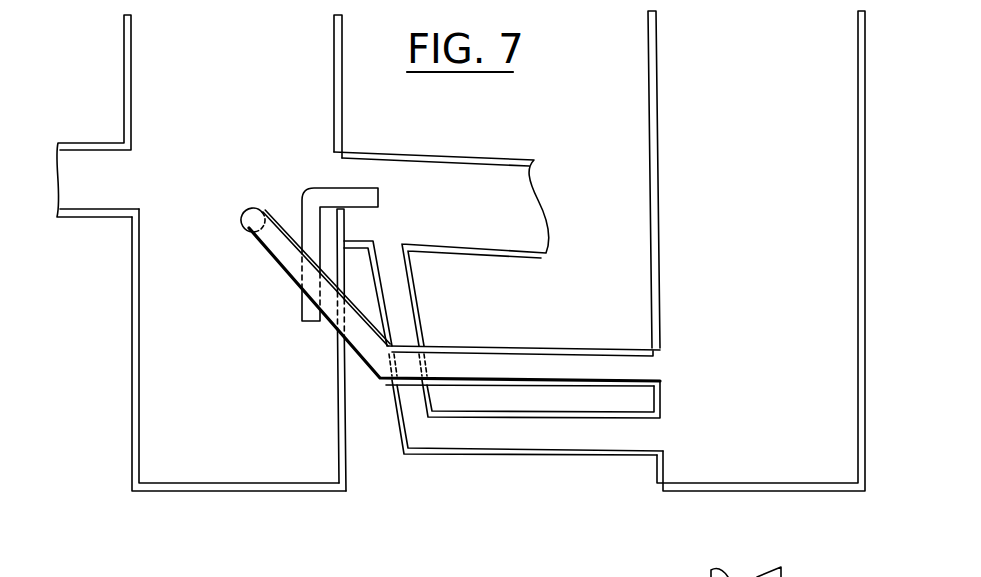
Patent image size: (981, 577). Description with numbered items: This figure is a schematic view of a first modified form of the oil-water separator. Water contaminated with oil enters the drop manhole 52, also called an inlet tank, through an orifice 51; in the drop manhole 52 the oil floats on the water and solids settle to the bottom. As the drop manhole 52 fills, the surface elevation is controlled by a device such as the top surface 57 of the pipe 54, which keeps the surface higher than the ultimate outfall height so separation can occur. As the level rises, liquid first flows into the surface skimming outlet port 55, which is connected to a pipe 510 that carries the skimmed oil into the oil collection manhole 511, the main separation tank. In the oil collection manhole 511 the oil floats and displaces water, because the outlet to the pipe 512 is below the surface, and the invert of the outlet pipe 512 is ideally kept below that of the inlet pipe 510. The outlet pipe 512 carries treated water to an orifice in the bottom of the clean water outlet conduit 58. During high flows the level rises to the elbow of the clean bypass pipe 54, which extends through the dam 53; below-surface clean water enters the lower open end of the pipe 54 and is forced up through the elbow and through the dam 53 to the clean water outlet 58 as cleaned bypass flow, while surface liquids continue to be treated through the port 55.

The orifice 51 is at (106, 195).
The drop manhole 52 is at (177, 400).
The dam 53 is at (339, 223).
The clean bypass pipe 54 is at (333, 197).
The skimming outlet port 55 is at (243, 225).
The top surface of pipe 57 is at (310, 190).
The clean water outlet conduit 58 is at (480, 216).
The pipe 510 is at (588, 363).
The oil collection manhole 511 is at (783, 462).
The outlet pipe 512 is at (587, 442).